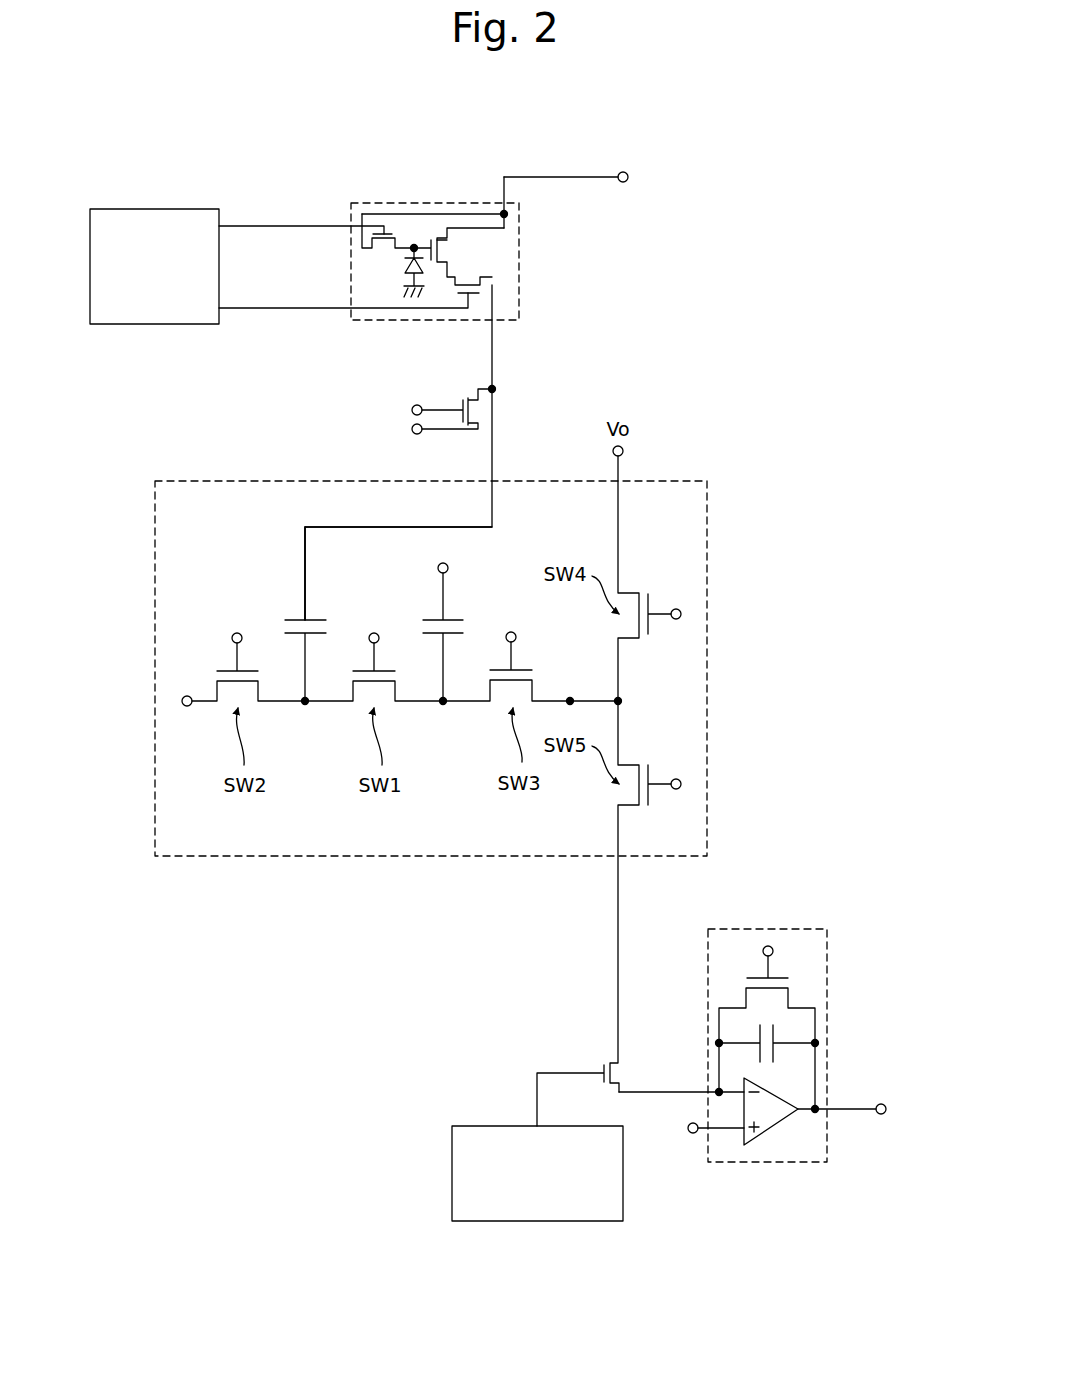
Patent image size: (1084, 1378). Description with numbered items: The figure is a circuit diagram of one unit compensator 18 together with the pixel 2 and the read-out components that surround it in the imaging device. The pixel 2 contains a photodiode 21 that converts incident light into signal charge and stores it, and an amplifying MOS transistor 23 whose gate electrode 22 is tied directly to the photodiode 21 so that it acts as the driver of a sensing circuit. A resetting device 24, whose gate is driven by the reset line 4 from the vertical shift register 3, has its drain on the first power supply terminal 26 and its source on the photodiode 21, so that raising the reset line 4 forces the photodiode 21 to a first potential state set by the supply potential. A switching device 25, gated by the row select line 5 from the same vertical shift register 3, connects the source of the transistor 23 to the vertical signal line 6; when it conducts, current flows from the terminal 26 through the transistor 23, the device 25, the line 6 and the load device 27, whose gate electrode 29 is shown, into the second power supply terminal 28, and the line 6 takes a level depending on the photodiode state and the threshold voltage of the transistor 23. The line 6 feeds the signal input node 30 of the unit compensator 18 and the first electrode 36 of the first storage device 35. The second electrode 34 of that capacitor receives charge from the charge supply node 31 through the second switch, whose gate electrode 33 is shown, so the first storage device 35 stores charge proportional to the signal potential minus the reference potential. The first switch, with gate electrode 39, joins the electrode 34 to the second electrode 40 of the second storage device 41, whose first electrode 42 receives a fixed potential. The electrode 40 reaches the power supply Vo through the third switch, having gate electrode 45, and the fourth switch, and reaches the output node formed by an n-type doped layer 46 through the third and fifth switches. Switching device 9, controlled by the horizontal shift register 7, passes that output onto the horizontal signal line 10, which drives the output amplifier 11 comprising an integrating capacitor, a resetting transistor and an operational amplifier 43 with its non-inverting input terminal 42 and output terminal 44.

The pixel 2 is at (474, 203).
The vertical shift register 3 is at (148, 209).
The reset line 4 is at (276, 226).
The row select line 5 is at (268, 308).
The vertical signal line 6 is at (497, 349).
The horizontal shift register 7 is at (452, 1180).
The switching device 9 is at (612, 1062).
The horizontal signal line 10 is at (676, 1092).
The output amplifier 11 is at (808, 929).
The unit compensator 18 is at (678, 481).
The photodiode 21 is at (406, 268).
The gate electrode 22 is at (432, 243).
The MOS transistor 23 is at (446, 250).
The resetting device 24 is at (393, 233).
The switching device 25 is at (468, 278).
The first power supply terminal 26 is at (629, 177).
The load device 27 is at (467, 397).
The second power supply terminal 28 is at (411, 429).
The gate electrode 29 is at (411, 410).
The signal input node 30 is at (497, 389).
The charge supply node 31 is at (188, 707).
The gate electrode 33 is at (236, 633).
The second electrode 34 is at (287, 685).
The first storage device 35 is at (266, 622).
The first electrode 36 is at (287, 667).
The gate electrode 39 is at (381, 637).
The second electrode 40 is at (462, 685).
The second storage device 41 is at (474, 624).
The first electrode 42 is at (462, 664).
The operational amplifier 43 is at (778, 1126).
The output terminal 44 is at (884, 1114).
The gate electrode 45 is at (517, 632).
The n-type doped layer 46 is at (571, 699).